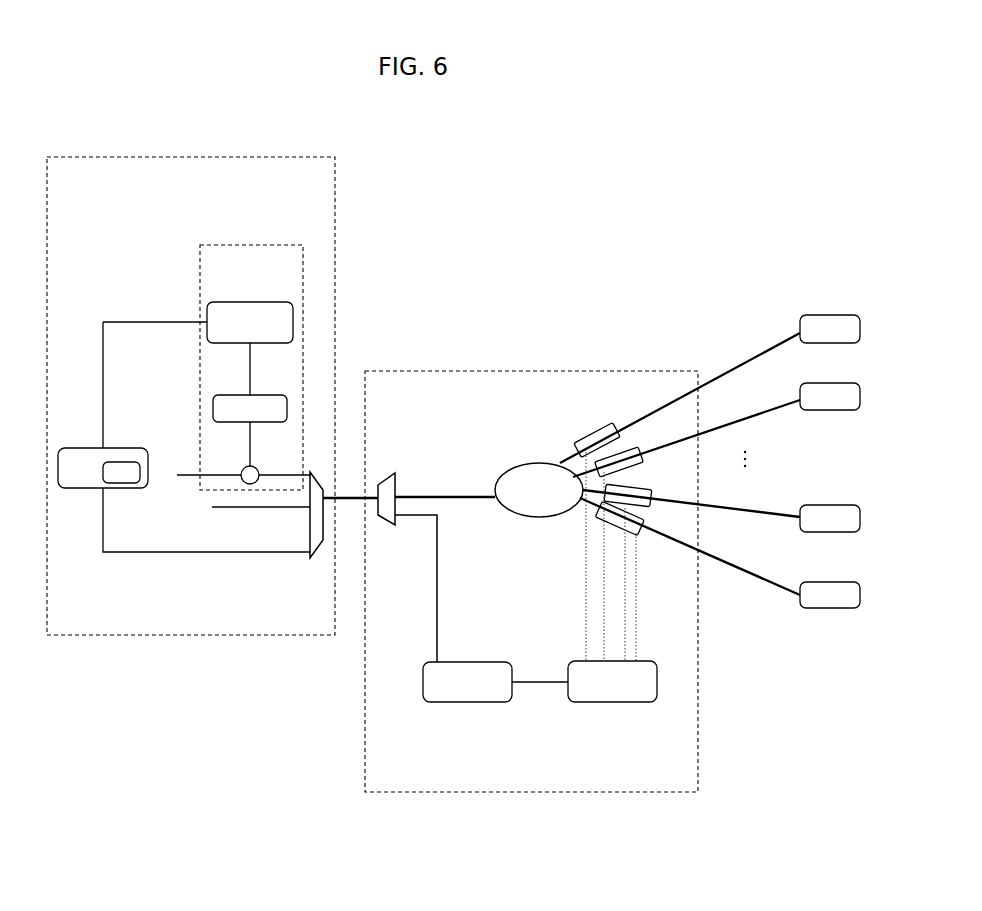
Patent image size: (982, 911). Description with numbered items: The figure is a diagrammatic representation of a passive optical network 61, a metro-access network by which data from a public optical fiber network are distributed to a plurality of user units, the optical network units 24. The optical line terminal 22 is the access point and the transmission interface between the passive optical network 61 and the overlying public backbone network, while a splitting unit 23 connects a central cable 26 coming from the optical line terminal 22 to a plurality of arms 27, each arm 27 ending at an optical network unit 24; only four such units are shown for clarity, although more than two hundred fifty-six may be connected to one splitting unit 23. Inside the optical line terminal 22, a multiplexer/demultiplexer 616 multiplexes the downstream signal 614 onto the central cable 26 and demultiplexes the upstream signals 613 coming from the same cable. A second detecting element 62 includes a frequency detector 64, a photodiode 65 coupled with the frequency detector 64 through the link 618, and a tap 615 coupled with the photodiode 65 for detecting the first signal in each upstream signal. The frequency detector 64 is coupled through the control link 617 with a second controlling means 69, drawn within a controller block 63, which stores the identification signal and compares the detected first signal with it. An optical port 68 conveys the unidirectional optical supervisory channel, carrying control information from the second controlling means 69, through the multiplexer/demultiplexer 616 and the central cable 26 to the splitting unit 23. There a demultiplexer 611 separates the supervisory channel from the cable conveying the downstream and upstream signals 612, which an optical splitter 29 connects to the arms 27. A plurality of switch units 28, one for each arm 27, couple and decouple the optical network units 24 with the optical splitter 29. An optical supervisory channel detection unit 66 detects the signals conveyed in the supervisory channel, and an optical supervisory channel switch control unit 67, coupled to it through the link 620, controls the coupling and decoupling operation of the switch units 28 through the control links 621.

The passive optical network 61 is at (497, 214).
The optical line terminal 22 is at (219, 637).
The splitting unit 23 is at (523, 793).
The second detecting element 62 is at (280, 245).
The frequency detector 64 is at (249, 302).
The photodiode 65 is at (263, 395).
The link 618 is at (250, 366).
The tap 615 is at (256, 469).
The upstream signals 613 is at (192, 478).
The downstream signal 614 is at (236, 508).
The control link 617 is at (118, 322).
The optical port for the supervisory channel 68 is at (172, 553).
The controller 63 is at (84, 489).
The second controlling means 69 is at (103, 471).
The multiplexer/demultiplexer 616 is at (310, 558).
The central cable 26 is at (360, 496).
The demultiplexer 611 is at (386, 483).
The cable conveying the downstream and upstream signals 612 is at (432, 493).
The optical splitter 29 is at (510, 465).
The arm 27 is at (730, 370).
The switch unit 28 is at (587, 428).
The optical network unit 24 is at (860, 320).
The control link 621 is at (586, 561).
The optical supervisory channel detection unit 66 is at (455, 703).
The link 620 is at (545, 684).
The optical supervisory channel switch control unit 67 is at (640, 703).